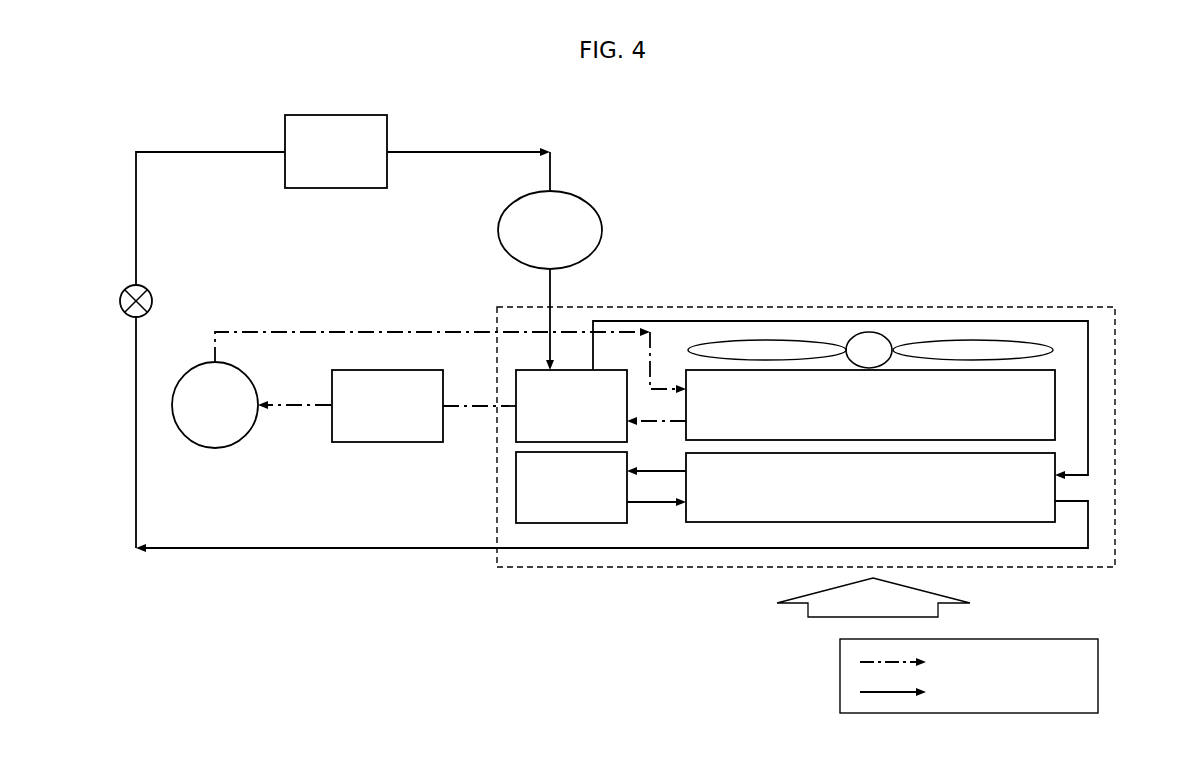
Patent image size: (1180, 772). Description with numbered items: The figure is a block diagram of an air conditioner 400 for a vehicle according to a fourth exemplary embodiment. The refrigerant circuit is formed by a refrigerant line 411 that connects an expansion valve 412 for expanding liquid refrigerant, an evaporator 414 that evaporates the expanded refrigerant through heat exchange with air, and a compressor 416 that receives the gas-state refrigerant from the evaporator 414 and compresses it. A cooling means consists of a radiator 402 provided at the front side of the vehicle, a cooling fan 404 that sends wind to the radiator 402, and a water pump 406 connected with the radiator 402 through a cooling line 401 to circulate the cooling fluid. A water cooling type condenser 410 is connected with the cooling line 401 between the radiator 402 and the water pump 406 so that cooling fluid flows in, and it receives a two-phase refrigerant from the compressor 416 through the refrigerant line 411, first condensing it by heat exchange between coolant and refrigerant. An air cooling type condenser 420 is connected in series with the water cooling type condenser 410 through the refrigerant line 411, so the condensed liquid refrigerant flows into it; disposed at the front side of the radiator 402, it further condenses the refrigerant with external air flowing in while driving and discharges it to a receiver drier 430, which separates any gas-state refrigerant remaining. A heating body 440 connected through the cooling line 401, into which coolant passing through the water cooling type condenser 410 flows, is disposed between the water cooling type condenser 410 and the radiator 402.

The air conditioner 400 is at (686, 94).
The cooling line 401 is at (330, 332).
The radiator 402 is at (1055, 407).
The cooling fan 404 is at (869, 332).
The water pump 406 is at (215, 448).
The water cooling type condenser 410 is at (516, 427).
The refrigerant line 411 is at (1088, 355).
The expansion valve 412 is at (120, 301).
The evaporator 414 is at (336, 115).
The compressor 416 is at (602, 228).
The air cooling type condenser 420 is at (726, 522).
The receiver drier 430 is at (516, 490).
The heating body 440 is at (388, 442).